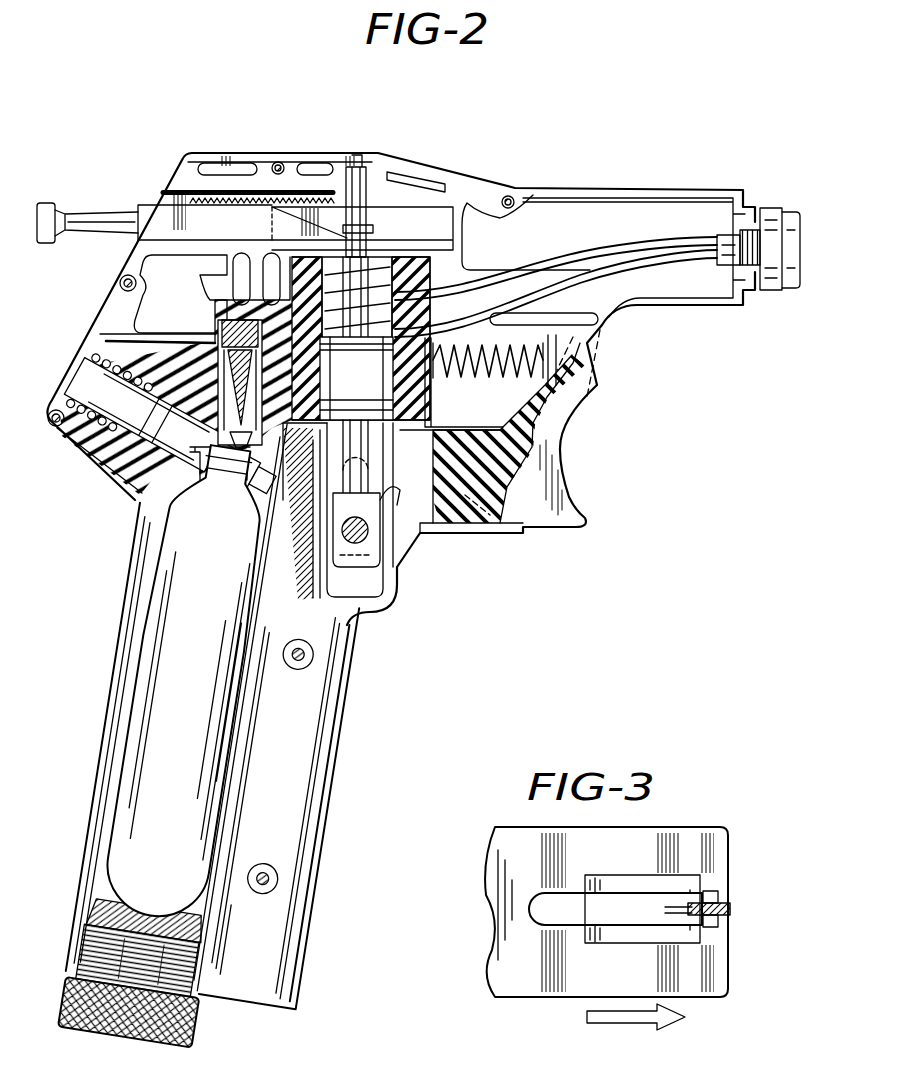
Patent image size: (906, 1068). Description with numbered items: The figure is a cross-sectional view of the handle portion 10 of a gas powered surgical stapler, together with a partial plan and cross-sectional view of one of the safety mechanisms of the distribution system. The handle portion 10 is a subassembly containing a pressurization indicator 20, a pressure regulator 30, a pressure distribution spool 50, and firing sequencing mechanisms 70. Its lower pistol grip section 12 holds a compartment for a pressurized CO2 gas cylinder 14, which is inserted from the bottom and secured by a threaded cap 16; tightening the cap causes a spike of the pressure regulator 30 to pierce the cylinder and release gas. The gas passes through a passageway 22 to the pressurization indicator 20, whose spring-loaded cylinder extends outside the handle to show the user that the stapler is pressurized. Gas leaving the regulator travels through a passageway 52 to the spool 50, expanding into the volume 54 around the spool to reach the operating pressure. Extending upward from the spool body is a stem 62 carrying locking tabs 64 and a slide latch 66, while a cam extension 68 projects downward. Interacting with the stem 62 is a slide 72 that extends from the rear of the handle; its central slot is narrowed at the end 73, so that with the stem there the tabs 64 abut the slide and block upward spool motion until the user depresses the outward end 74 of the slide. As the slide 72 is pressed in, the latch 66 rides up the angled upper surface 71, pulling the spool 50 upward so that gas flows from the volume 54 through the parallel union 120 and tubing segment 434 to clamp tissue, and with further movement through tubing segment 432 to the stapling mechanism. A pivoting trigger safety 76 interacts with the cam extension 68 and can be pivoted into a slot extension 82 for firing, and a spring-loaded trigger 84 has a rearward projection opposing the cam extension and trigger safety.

In FIG. 2, the handle portion 10 is at (185, 158).
In FIG. 2, the lower pistol grip section 12 is at (117, 620).
In FIG. 2, the pressurized CO2 gas cylinder 14 is at (153, 730).
In FIG. 2, the threaded cap 16 is at (197, 1023).
In FIG. 2, the pressurization indicator 20 is at (80, 372).
In FIG. 2, the passageway 22 is at (147, 490).
In FIG. 2, the pressure regulator 30 is at (213, 387).
In FIG. 2, the pressure distribution spool 50 is at (356, 378).
In FIG. 2, the passageway 52 is at (255, 376).
In FIG. 2, the volume around the spool 54 is at (392, 382).
In FIG. 2, the locking tab 64 is at (368, 280).
In FIG. 3, the locking tab 64 is at (717, 892).
In FIG. 2, the slide latch 66 is at (360, 228).
In FIG. 2, the cam extension 68 is at (353, 478).
In FIG. 2, the firing sequencing mechanism 70 is at (157, 198).
In FIG. 2, the narrowed end of the slide slot 73 is at (376, 263).
In FIG. 3, the narrowed end of the slide slot 73 is at (664, 911).
In FIG. 2, the outward end of the slide 74 is at (50, 202).
In FIG. 2, the pivoting trigger safety 76 is at (377, 584).
In FIG. 2, the extension of the slot 82 is at (392, 505).
In FIG. 2, the spring-loaded trigger 84 is at (570, 457).
In FIG. 2, the parallel union 120 is at (777, 292).
In FIG. 2, the tubing segment 432 is at (497, 268).
In FIG. 2, the tubing segment 434 is at (513, 323).
In FIG. 3, the stem 62 is at (733, 907).
In FIG. 3, the angled upper surface 71 is at (620, 933).
In FIG. 3, the slide 72 is at (500, 970).